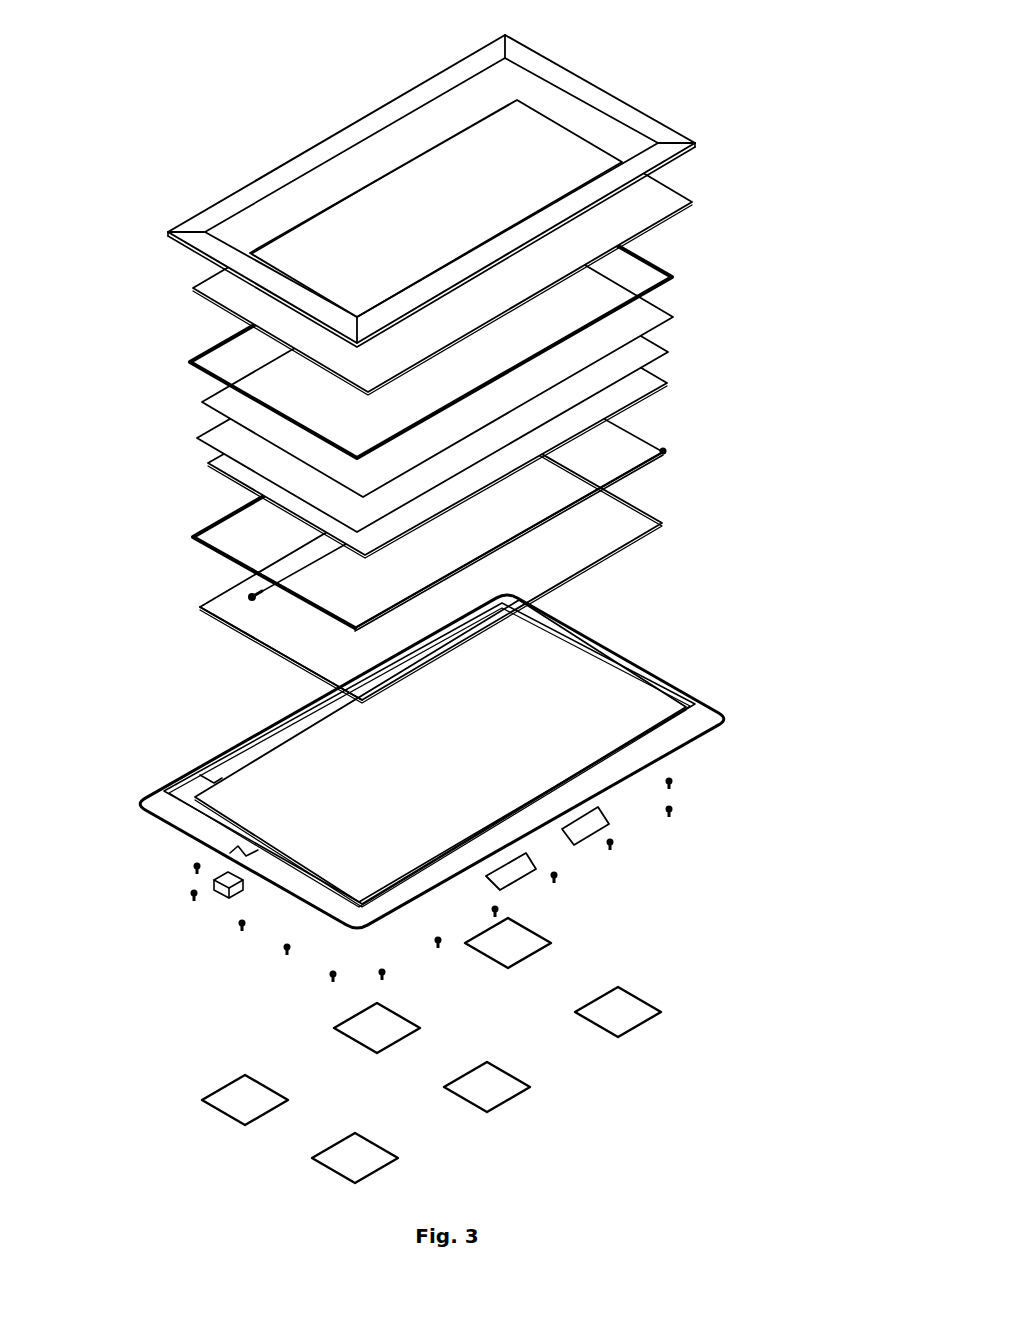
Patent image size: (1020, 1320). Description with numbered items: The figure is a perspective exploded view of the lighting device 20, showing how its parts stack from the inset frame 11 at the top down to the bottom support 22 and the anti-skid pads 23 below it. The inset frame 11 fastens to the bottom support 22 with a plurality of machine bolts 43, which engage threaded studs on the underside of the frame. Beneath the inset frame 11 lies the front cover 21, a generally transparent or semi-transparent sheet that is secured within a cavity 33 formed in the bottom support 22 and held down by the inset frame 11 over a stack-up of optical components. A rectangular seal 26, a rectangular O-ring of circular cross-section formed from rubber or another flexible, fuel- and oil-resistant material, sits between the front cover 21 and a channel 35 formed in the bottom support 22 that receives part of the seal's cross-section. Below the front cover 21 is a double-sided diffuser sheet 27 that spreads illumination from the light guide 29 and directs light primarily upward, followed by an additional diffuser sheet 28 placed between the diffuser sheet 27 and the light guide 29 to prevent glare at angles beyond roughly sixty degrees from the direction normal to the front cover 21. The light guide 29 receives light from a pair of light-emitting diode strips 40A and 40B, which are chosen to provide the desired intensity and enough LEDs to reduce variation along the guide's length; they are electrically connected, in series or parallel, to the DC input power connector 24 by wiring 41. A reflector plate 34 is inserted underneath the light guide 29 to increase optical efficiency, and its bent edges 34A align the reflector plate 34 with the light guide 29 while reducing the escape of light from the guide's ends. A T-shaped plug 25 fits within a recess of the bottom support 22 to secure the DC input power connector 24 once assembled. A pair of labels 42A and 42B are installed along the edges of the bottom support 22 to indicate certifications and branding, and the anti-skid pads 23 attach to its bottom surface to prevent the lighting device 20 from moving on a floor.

The lighting device 20 is at (638, 77).
The inset frame 11 is at (198, 253).
The front cover 21 is at (695, 200).
The rectangular seal 26 is at (677, 276).
The double-sided diffuser sheet 27 is at (675, 317).
The additional diffuser sheet 28 is at (670, 352).
The light guide 29 is at (668, 383).
The light-emitting diode strip 40A is at (667, 448).
The light-emitting diode strip 40B is at (205, 527).
The wiring 41 is at (225, 557).
The DC input power connector 24 is at (250, 600).
The reflector plate 34 is at (665, 522).
The bent edges 34A is at (271, 645).
The cavity 33 is at (581, 700).
The bottom support 22 is at (733, 715).
The channel 35 is at (209, 779).
The machine bolts 43 is at (190, 872).
The T-shaped plug 25 is at (221, 897).
The label 42A is at (517, 879).
The label 42B is at (583, 843).
The anti-skid pads 23 is at (215, 1105).